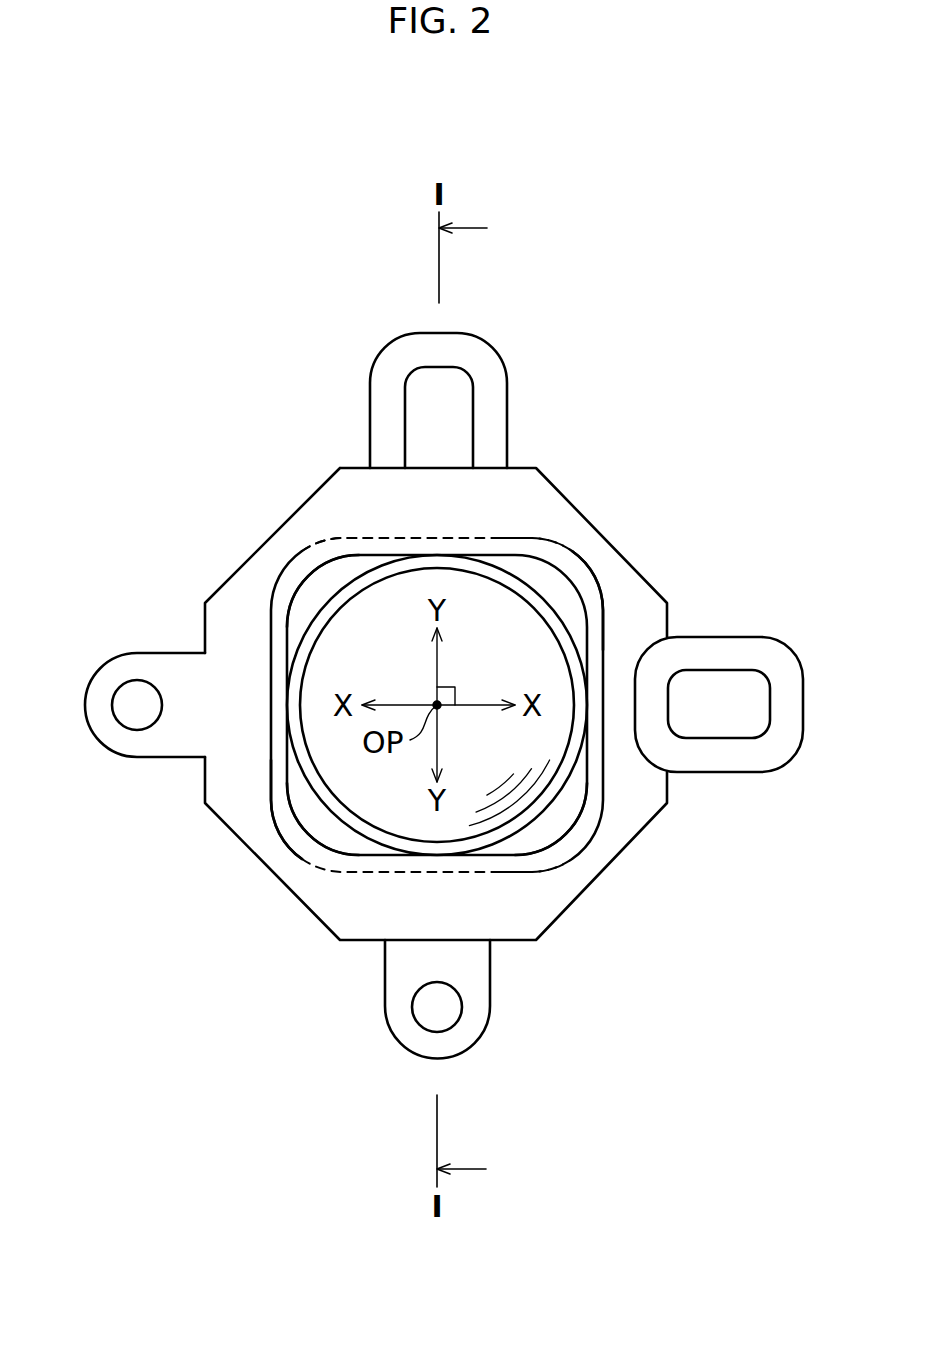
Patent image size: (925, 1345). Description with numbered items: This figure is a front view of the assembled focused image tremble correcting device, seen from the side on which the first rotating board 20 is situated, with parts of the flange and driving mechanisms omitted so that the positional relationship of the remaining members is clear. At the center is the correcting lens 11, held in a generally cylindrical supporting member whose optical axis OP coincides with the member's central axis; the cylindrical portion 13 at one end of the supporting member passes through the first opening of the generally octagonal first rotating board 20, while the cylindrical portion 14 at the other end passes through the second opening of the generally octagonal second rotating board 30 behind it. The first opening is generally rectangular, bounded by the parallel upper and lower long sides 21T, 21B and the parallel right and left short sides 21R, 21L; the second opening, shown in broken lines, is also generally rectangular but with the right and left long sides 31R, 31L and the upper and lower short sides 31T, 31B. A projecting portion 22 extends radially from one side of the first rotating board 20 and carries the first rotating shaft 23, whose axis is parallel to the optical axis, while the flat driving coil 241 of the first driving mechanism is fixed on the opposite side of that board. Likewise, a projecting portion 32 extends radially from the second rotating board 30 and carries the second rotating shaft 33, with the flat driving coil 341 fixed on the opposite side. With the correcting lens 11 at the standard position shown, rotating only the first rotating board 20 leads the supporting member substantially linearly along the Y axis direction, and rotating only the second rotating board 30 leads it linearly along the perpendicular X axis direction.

The correcting lens 11 is at (538, 668).
The cylindrical portion 13 is at (536, 694).
The cylindrical portion 14 is at (588, 650).
The first rotating board 20 is at (483, 704).
The second rotating board 30 is at (600, 872).
The side 21T is at (366, 558).
The side 21R is at (603, 785).
The side 21B is at (352, 850).
The side 21L is at (275, 790).
The projecting portion 22 is at (116, 665).
The first rotating shaft 23 is at (138, 703).
The driving coil 241 is at (804, 702).
The side 31T is at (556, 562).
The side 31R is at (578, 583).
The side 31B is at (550, 860).
The side 31L is at (310, 584).
The projecting portion 32 is at (464, 1020).
The second rotating shaft 33 is at (437, 1008).
The driving coil 341 is at (483, 341).